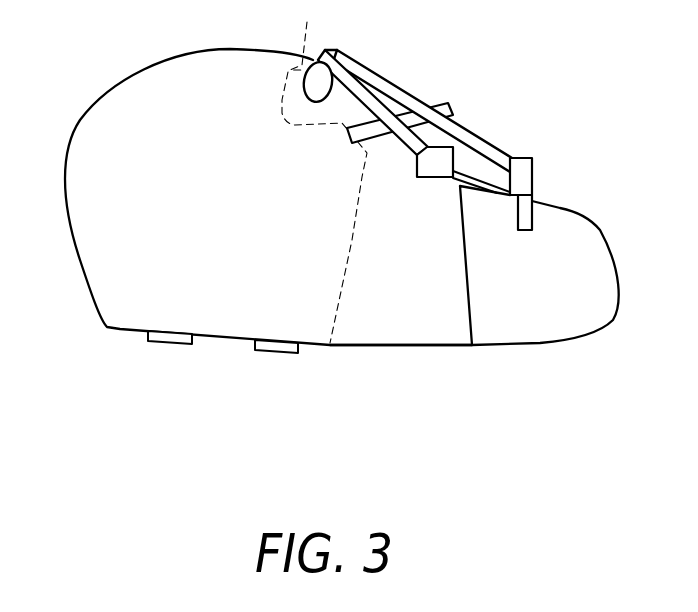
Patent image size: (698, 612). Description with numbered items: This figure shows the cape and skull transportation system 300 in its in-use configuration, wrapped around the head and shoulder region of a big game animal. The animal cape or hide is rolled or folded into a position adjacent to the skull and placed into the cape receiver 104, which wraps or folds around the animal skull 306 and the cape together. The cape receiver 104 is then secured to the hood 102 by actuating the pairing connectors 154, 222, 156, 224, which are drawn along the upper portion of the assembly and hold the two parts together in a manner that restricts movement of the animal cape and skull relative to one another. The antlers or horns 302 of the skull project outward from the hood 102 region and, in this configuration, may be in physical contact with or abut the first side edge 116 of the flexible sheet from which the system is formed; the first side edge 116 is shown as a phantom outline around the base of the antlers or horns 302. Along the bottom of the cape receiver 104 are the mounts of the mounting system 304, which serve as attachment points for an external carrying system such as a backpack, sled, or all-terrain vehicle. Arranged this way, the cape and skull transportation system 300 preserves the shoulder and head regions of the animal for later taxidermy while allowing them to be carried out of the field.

The hood 102 is at (588, 257).
The cape receiver 104 is at (127, 278).
The first side edge 116 is at (310, 17).
The pairing connector 154 is at (589, 192).
The pairing connector 222 is at (518, 176).
The pairing connector 156 is at (509, 146).
The pairing connector 224 is at (446, 155).
The cape and skull transportation system 300 is at (467, 423).
The antlers or horns 302 is at (318, 82).
The mounting system 304 is at (275, 354).
The animal skull 306 is at (390, 317).